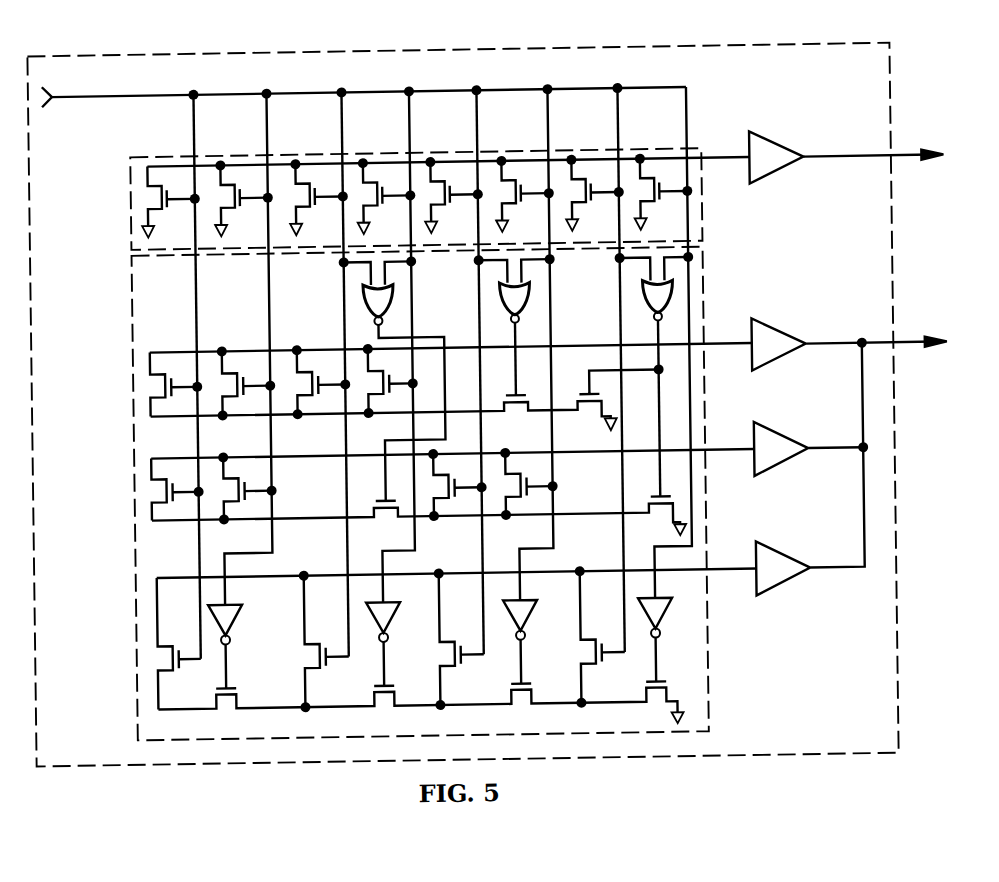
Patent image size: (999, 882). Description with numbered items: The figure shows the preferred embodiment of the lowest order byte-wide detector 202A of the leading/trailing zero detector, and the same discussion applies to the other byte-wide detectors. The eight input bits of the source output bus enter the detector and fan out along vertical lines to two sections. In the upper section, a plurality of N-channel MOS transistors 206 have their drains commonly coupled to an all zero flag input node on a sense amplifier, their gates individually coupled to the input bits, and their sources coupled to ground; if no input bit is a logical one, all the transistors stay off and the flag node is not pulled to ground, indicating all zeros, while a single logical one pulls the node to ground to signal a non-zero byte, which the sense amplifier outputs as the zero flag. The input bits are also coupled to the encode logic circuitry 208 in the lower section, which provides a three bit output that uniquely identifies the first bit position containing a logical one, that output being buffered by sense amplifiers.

The byte-wide detector 202A is at (388, 49).
The N-channel MOS transistors 206 is at (133, 212).
The encode logic circuitry 208 is at (132, 314).